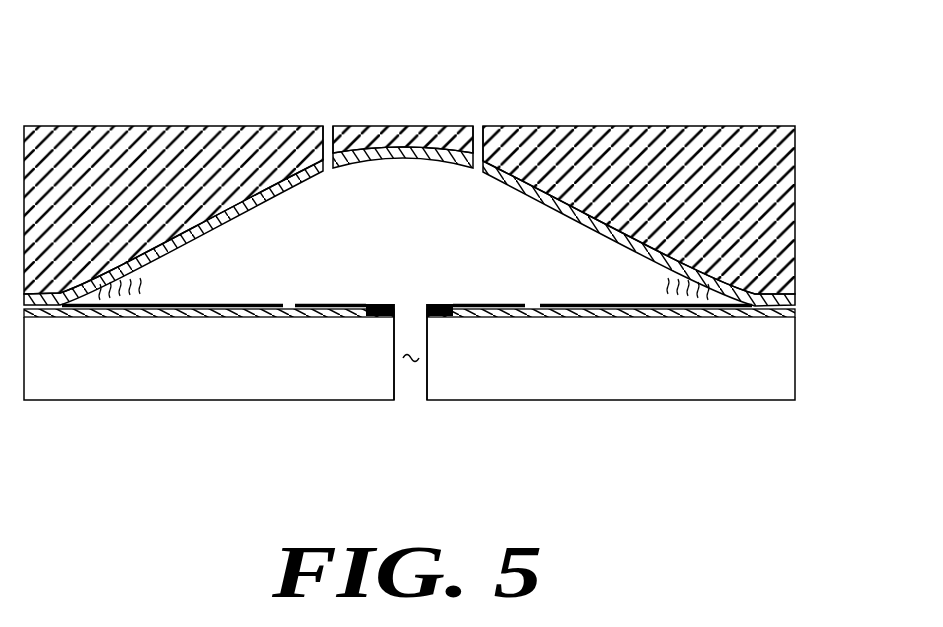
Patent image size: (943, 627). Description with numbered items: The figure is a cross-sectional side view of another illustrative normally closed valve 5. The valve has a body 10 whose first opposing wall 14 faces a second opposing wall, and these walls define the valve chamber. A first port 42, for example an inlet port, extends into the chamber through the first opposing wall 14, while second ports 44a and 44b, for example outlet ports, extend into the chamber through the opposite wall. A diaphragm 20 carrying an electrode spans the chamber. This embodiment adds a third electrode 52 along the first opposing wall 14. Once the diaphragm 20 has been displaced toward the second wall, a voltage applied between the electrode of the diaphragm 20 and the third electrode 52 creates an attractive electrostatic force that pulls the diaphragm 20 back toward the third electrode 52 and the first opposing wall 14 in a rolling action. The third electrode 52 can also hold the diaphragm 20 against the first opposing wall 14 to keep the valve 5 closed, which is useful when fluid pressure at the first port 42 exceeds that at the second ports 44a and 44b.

The valve 5 is at (743, 101).
The body 10 is at (765, 183).
The diaphragm 20 is at (573, 306).
The second port 44a is at (328, 133).
The second port 44b is at (479, 140).
The first opposing wall 14 is at (220, 318).
The third electrode 52 is at (140, 312).
The first port 42 is at (410, 372).